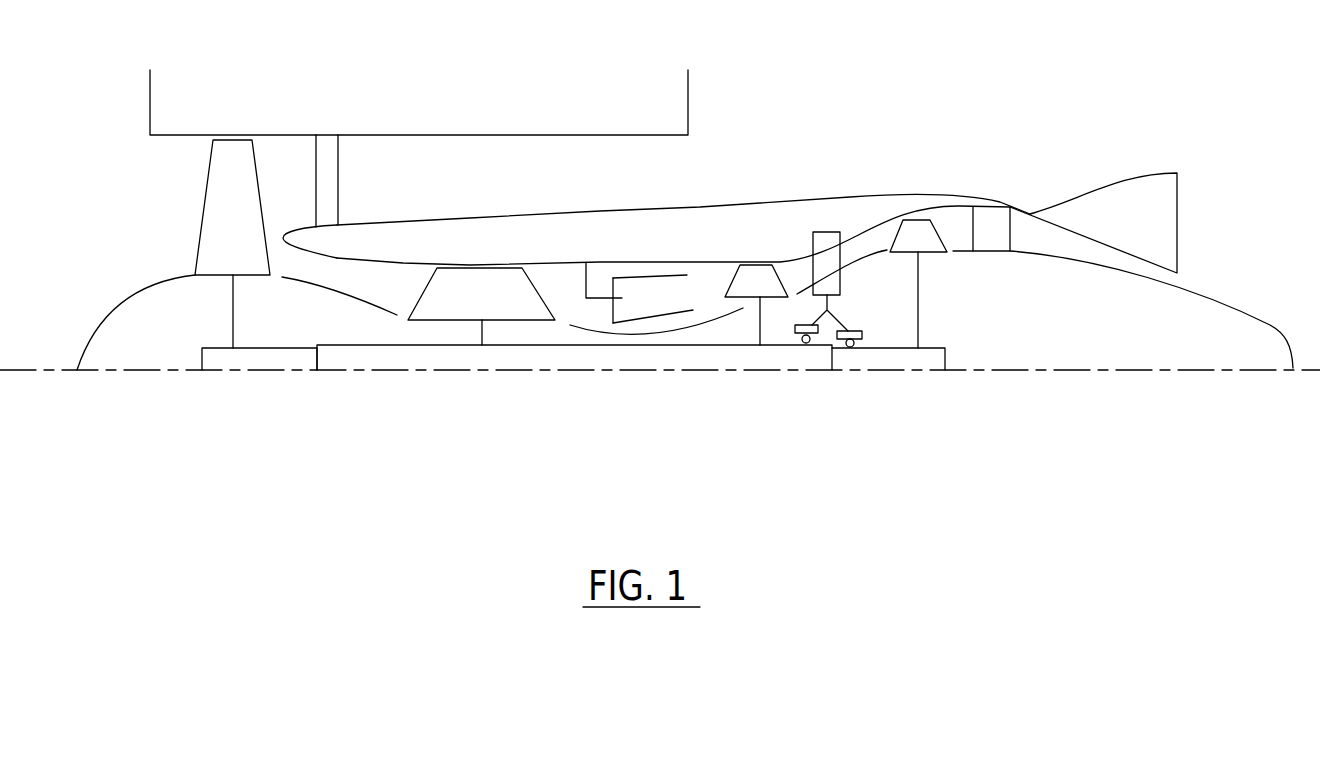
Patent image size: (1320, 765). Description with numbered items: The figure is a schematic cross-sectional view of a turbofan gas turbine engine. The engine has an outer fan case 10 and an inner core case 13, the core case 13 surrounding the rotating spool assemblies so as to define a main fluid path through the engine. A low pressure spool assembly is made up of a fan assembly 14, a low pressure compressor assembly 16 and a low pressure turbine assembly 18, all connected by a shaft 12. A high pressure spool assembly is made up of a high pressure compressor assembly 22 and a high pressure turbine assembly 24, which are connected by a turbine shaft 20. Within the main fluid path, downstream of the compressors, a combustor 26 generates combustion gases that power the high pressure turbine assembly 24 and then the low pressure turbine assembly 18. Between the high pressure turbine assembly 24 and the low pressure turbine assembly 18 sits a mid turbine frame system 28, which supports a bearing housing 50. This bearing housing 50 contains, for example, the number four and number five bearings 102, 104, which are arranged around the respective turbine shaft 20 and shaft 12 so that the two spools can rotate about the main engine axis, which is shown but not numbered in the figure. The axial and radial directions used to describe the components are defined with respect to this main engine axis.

The fan case 10 is at (512, 135).
The shaft 12 is at (222, 370).
The core case 13 is at (752, 202).
The fan assembly 14 is at (229, 157).
The low pressure compressor assembly 16 is at (293, 370).
The low pressure turbine assembly 18 is at (920, 313).
The turbine shaft 20 is at (692, 355).
The high pressure compressor assembly 22 is at (460, 307).
The high pressure turbine assembly 24 is at (772, 287).
The combustor 26 is at (640, 302).
The mid turbine frame system 28 is at (827, 232).
The bearing housing 50 is at (845, 314).
The bearing 102 is at (802, 343).
The bearing 104 is at (852, 347).